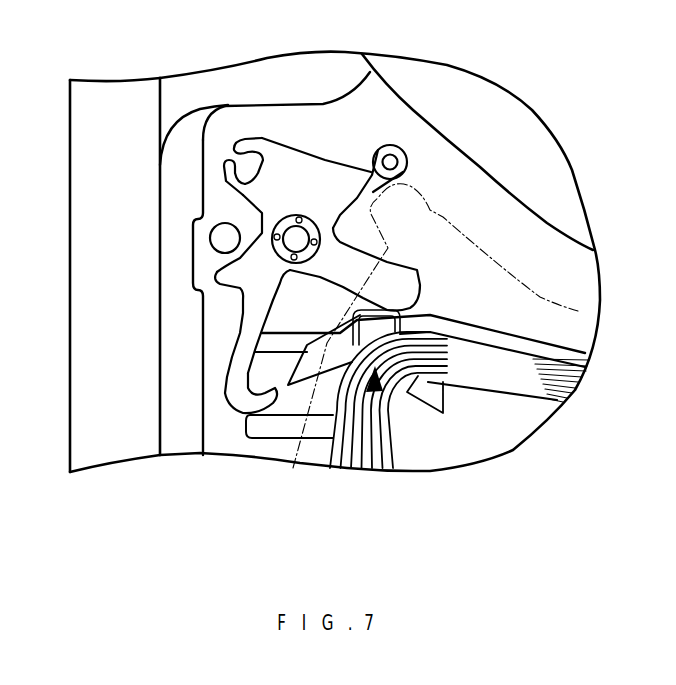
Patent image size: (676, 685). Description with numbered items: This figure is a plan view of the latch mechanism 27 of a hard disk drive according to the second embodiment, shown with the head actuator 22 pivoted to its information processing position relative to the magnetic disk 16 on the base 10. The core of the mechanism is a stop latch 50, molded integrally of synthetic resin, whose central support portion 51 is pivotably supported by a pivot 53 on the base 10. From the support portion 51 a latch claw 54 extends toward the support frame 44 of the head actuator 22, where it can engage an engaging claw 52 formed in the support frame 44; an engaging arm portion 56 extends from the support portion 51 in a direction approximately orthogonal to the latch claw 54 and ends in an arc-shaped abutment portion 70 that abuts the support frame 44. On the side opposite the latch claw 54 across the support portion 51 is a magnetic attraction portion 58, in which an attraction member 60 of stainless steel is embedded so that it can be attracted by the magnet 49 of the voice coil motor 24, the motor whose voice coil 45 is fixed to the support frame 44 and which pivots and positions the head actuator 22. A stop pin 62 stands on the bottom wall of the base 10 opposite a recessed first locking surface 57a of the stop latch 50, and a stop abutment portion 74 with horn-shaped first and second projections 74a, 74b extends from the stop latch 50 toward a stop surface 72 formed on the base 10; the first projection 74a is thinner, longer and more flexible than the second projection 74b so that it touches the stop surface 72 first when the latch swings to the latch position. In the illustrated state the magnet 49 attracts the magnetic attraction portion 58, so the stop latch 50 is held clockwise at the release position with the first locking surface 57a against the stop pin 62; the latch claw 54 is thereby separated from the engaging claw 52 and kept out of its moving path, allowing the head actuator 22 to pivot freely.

The base 10 is at (70, 115).
The magnetic disk 16 is at (530, 127).
The head actuator 22 is at (576, 421).
The voice coil motor 24 is at (407, 494).
The latch mechanism 27 is at (297, 114).
The support frame 44 is at (476, 333).
The voice coil 45 is at (520, 355).
The magnet 49 is at (580, 312).
The stop latch 50 is at (240, 284).
The support portion 51 is at (299, 216).
The engaging claw 52 is at (297, 362).
The pivot 53 is at (303, 230).
The latch claw 54 is at (231, 391).
The engaging arm portion 56 is at (408, 270).
The first locking surface 57a is at (228, 260).
The magnetic attraction portion 58 is at (375, 148).
The attraction member 60 is at (396, 160).
The stop pin 62 is at (215, 238).
The arc-shaped abutment portion 70 is at (382, 312).
The stop surface 72 is at (212, 142).
The stop abutment portion 74 is at (212, 121).
The first projection 74a is at (223, 171).
The second projection 74b is at (238, 145).